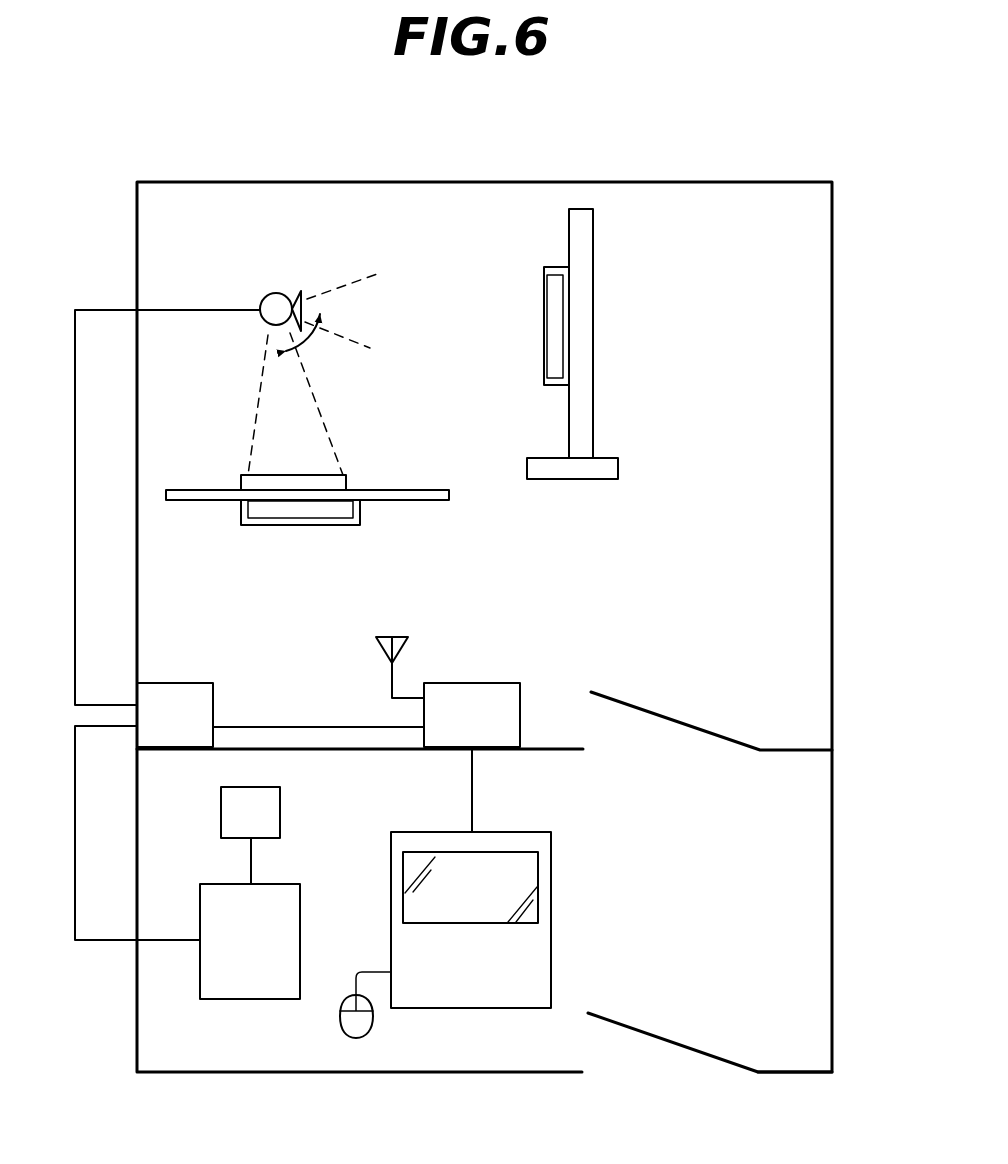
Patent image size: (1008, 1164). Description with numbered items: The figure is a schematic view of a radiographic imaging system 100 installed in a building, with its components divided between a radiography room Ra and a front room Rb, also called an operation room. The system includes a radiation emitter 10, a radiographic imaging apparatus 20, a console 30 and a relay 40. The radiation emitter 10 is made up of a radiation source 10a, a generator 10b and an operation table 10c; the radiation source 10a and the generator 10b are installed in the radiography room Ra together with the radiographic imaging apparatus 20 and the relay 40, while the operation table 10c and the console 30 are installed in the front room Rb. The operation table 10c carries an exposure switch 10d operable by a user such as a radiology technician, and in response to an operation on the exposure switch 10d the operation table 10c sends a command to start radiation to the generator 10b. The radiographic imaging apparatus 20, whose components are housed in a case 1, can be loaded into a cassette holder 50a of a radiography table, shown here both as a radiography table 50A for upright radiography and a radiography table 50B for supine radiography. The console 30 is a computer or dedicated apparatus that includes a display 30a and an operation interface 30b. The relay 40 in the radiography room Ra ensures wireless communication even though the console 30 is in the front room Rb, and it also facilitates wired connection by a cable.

The radiographic imaging system 100 is at (468, 174).
The radiography room Ra is at (833, 420).
The front room Rb is at (831, 913).
The radiation emitter 10 is at (73, 558).
The radiation source 10a is at (178, 683).
The generator 10b is at (268, 293).
The operation table 10c is at (300, 925).
The exposure switch 10d is at (221, 812).
The radiographic imaging apparatus 20 is at (554, 340).
The console 30 is at (553, 890).
The display 30a is at (508, 852).
The operation interface 30b is at (367, 1029).
The relay 40 is at (481, 683).
The radiography table for upright radiography 50A is at (600, 240).
The radiography table for supine radiography 50B is at (400, 467).
The cassette holder 50a is at (558, 267).
The case 1 is at (241, 485).